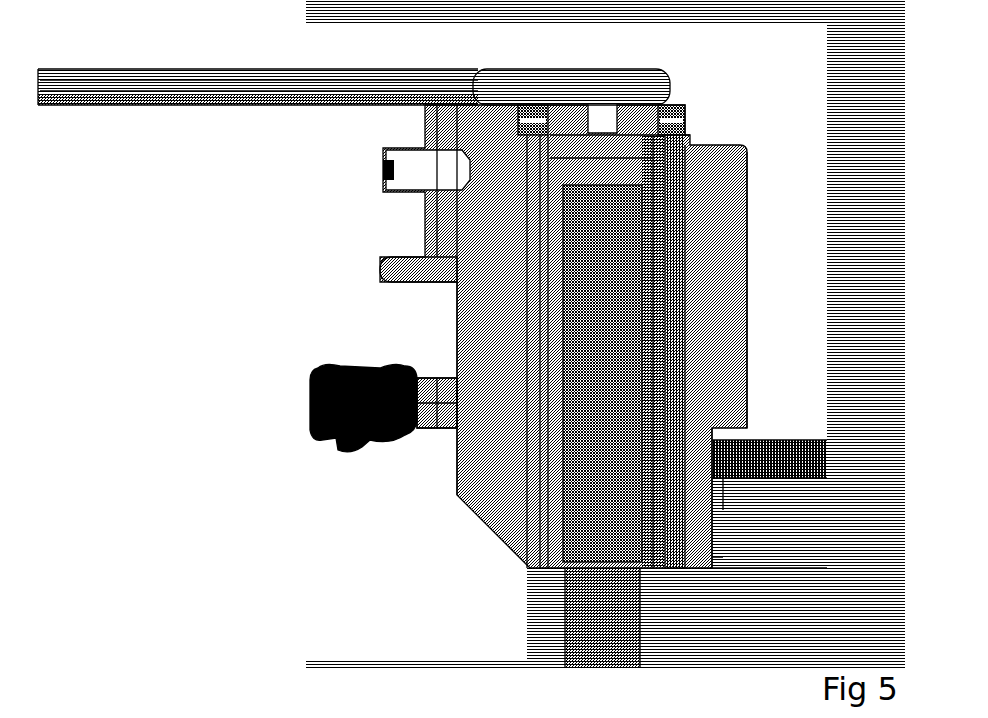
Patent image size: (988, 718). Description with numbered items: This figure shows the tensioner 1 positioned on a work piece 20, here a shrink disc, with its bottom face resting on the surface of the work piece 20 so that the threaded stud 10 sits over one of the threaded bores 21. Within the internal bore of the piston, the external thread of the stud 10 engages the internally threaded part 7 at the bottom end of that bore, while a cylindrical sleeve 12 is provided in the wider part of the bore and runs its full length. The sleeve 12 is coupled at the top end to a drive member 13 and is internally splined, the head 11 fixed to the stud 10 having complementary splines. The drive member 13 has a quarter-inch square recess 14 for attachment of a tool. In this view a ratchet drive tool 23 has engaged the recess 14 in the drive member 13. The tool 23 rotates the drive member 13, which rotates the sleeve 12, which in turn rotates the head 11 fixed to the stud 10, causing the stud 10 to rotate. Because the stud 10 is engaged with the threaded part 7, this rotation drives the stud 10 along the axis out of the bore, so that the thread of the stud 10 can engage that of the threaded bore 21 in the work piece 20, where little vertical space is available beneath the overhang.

The tensioner 1 is at (457, 460).
The internally threaded part 7 is at (640, 515).
The threaded stud 10 is at (622, 353).
The head 11 is at (622, 174).
The cylindrical sleeve 12 is at (658, 240).
The drive member 13 is at (548, 112).
The square recess 14 is at (620, 114).
The work piece 20 is at (789, 627).
The threaded bore 21 is at (622, 615).
The ratchet drive tool 23 is at (192, 97).